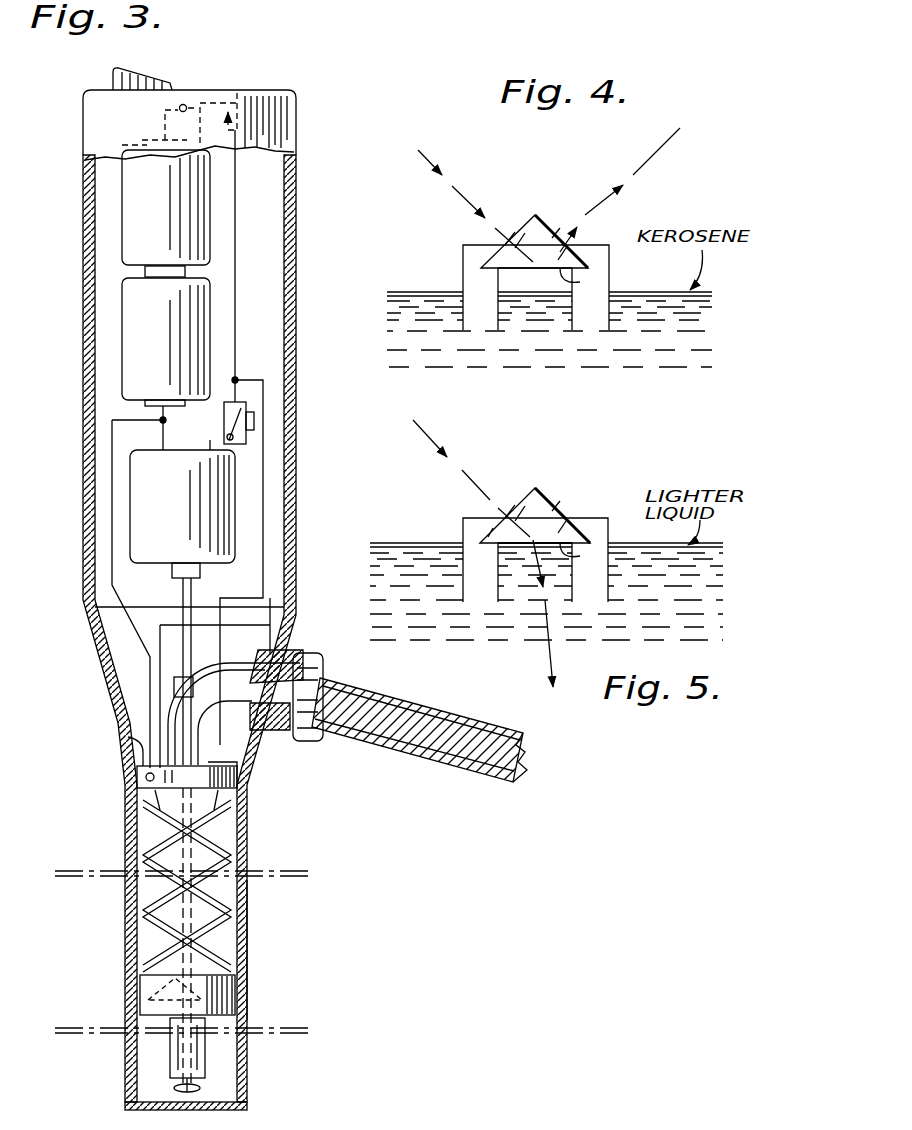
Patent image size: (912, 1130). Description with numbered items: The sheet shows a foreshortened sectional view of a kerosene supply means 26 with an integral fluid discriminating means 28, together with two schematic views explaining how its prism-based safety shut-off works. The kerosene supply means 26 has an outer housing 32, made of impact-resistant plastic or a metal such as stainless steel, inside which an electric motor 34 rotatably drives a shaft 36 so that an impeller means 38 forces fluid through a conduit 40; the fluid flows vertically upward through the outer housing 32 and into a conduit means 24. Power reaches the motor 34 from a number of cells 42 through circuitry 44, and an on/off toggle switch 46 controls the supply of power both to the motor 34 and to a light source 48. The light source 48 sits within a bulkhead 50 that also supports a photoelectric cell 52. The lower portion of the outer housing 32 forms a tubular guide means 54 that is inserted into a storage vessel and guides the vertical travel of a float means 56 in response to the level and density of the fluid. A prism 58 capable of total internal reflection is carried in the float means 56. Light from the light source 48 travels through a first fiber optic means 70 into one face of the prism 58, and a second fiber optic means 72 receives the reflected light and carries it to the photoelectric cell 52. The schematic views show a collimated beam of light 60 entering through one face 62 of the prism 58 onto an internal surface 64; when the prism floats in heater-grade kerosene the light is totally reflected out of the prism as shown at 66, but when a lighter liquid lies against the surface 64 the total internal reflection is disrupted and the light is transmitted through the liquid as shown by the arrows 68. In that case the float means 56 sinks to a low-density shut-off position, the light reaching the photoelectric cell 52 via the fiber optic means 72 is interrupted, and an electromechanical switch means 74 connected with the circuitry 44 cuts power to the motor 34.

In FIG. 3, the conduit means 24 is at (490, 770).
In FIG. 3, the kerosene supply means 26 is at (80, 348).
In FIG. 3, the fluid discriminating means 28 is at (118, 855).
In FIG. 3, the outer housing 32 is at (83, 247).
In FIG. 3, the electric motor 34 is at (182, 509).
In FIG. 3, the shaft 36 is at (182, 580).
In FIG. 3, the impeller means 38 is at (205, 1090).
In FIG. 3, the conduit 40 is at (272, 652).
In FIG. 3, the cells 42 is at (162, 231).
In FIG. 3, the circuitry 44 is at (237, 262).
In FIG. 3, the on/off toggle switch 46 is at (205, 90).
In FIG. 3, the light source 48 is at (150, 780).
In FIG. 3, the bulkhead 50 is at (128, 737).
In FIG. 3, the photoelectric cell 52 is at (242, 760).
In FIG. 3, the tubular guide means 54 is at (247, 905).
In FIG. 3, the float means 56 is at (225, 997).
In FIG. 4, the float means 56 is at (462, 278).
In FIG. 5, the float means 56 is at (462, 528).
In FIG. 3, the prism 58 is at (145, 993).
In FIG. 4, the prism 58 is at (540, 230).
In FIG. 5, the prism 58 is at (550, 510).
In FIG. 4, the collimated beam of light 60 is at (425, 157).
In FIG. 5, the collimated beam of light 60 is at (437, 430).
In FIG. 4, the face of the prism 62 is at (520, 225).
In FIG. 5, the face of the prism 62 is at (517, 495).
In FIG. 4, the internal surface of the prism 64 is at (580, 282).
In FIG. 5, the internal surface of the prism 64 is at (583, 553).
In FIG. 4, the reflected light 66 is at (662, 140).
In FIG. 5, the transmitted light arrows 68 is at (543, 643).
In FIG. 3, the first fiber optic means 70 is at (132, 820).
In FIG. 3, the second fiber optic means 72 is at (225, 825).
In FIG. 3, the electromechanical switch means 74 is at (246, 412).